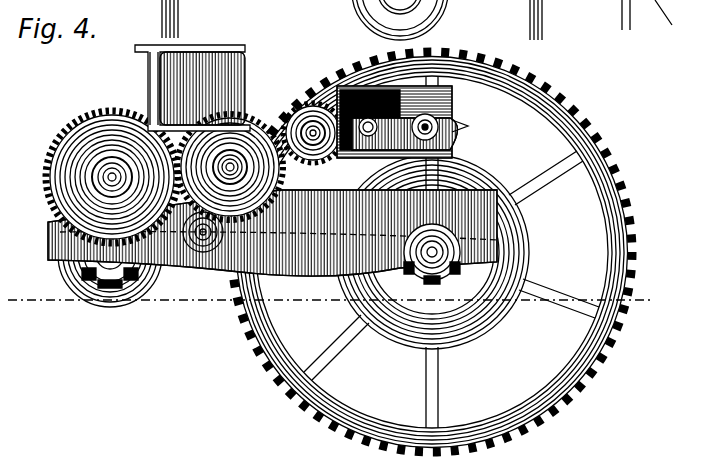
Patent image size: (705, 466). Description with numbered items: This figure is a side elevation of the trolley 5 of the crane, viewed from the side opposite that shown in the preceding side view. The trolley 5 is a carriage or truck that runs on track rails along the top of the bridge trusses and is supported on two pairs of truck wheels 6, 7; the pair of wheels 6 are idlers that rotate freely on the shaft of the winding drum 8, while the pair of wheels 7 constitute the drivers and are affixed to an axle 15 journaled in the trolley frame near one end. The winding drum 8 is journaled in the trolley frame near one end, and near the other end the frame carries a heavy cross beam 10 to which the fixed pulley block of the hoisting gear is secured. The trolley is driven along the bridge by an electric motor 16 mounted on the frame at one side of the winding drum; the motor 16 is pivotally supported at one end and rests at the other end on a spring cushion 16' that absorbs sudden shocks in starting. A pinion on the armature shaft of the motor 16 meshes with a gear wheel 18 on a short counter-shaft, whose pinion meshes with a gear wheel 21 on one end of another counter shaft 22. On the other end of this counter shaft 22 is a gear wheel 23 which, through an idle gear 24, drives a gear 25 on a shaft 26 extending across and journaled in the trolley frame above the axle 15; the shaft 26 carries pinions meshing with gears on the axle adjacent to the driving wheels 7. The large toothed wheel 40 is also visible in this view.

The trolley 5 is at (181, 88).
The truck wheels 6 is at (498, 268).
The truck wheels 7 is at (110, 302).
The winding drum 8 is at (522, 247).
The cross beam 10 is at (202, 88).
The axle 15 is at (80, 285).
The electric motor 16 is at (432, 130).
The spring cushion 16' is at (470, 144).
The gear wheel 18 is at (428, 53).
The gear wheel 21 is at (302, 114).
The counter shaft 22 is at (313, 130).
The gear wheel 23 is at (272, 233).
The idle gear 24 is at (232, 148).
The gear 25 is at (96, 177).
The shaft 26 is at (118, 156).
The gear wheel 40 is at (452, 252).